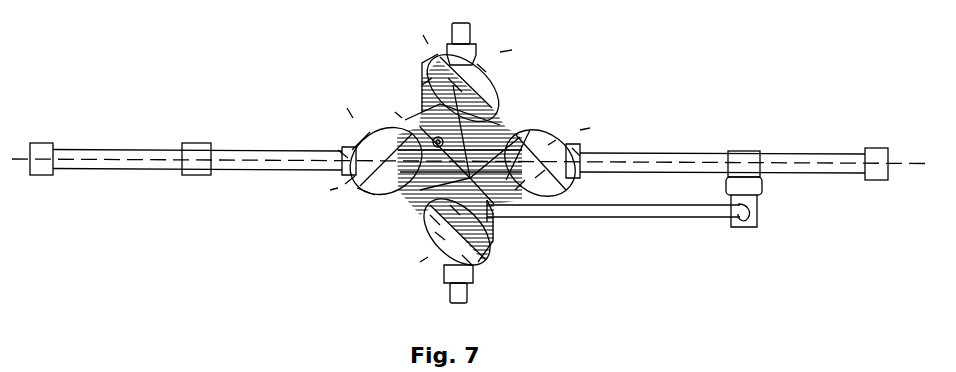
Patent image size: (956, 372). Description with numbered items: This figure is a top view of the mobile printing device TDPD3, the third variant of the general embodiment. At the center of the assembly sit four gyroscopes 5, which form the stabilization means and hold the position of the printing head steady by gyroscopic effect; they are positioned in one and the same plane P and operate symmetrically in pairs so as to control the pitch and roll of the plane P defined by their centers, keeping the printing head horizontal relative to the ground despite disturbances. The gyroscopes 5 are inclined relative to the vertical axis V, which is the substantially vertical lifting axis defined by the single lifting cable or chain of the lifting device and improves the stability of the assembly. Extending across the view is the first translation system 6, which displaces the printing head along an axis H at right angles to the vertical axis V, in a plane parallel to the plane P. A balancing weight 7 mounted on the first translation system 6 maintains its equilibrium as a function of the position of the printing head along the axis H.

The mobile printing device TDPD3 is at (158, 52).
The gyroscopes 5 is at (494, 100).
The first translation system 6 is at (815, 162).
The balancing weight 7 is at (197, 160).
The axis H is at (676, 160).
The plane P is at (427, 193).
The vertical axis V is at (497, 196).